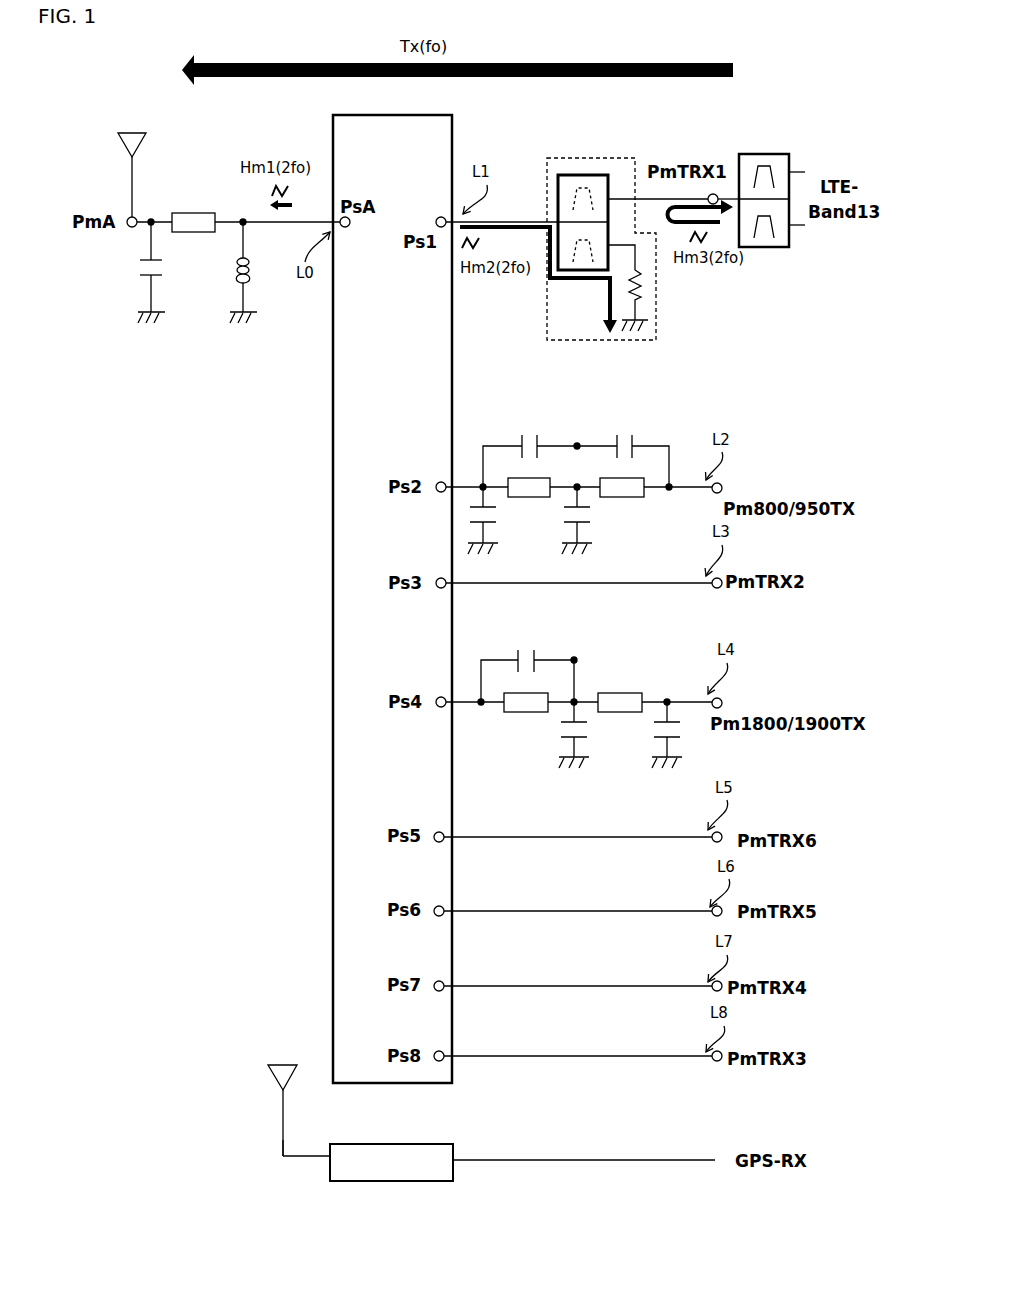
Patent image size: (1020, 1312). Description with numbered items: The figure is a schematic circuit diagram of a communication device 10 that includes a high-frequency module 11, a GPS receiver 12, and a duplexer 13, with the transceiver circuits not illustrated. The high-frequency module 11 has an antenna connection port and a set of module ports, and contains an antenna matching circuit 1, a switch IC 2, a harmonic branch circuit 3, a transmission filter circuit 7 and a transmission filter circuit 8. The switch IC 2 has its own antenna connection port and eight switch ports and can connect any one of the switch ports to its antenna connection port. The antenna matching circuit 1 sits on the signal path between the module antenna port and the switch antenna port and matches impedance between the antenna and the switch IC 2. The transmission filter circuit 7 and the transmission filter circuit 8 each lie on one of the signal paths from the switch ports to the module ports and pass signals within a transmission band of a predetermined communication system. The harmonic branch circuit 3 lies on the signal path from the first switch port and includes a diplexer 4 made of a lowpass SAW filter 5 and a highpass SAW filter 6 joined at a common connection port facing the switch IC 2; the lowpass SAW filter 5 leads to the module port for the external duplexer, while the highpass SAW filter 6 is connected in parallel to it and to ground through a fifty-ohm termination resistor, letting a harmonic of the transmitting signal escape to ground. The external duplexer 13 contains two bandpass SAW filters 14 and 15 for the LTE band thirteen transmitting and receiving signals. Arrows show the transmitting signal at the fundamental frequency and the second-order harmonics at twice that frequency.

The antenna matching circuit 1 is at (192, 192).
The switch IC 2 is at (338, 126).
The harmonic branch circuit 3 is at (636, 156).
The diplexer 4 is at (589, 219).
The lowpass SAW filter 5 is at (597, 180).
The highpass SAW filter 6 is at (568, 268).
The transmission filter circuit 7 is at (576, 428).
The transmission filter circuit 8 is at (632, 662).
The communication device 10 is at (160, 1083).
The high-frequency module 11 is at (228, 552).
The GPS receiver 12 is at (262, 1166).
The duplexer 13 is at (779, 199).
The bandpass SAW filter 14 is at (790, 155).
The bandpass SAW filter 15 is at (760, 250).